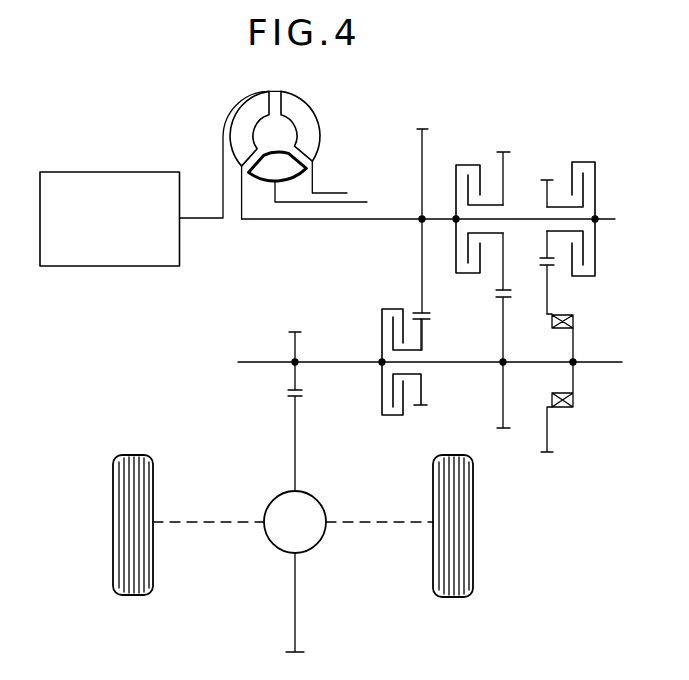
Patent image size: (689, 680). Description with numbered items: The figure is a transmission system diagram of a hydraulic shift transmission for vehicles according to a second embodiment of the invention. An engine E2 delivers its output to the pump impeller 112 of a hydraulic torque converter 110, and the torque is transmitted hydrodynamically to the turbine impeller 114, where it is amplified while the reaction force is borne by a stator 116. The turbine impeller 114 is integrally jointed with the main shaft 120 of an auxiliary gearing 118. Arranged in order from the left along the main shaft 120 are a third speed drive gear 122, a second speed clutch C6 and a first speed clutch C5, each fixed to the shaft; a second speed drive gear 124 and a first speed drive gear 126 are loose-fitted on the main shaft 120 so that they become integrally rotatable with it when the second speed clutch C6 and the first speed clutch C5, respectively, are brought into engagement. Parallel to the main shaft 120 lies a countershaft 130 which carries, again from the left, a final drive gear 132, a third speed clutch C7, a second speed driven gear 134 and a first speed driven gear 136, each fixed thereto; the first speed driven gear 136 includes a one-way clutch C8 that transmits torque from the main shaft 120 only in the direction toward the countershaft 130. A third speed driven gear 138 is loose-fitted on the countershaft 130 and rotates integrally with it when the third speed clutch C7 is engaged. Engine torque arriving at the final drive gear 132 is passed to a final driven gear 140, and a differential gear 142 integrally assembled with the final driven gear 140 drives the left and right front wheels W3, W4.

The hydraulic torque converter 110 is at (278, 165).
The pump impeller 112 is at (311, 135).
The turbine impeller 114 is at (247, 122).
The stator 116 is at (263, 177).
The auxiliary gearing 118 is at (563, 128).
The main shaft 120 is at (314, 221).
The third speed drive gear 122 is at (424, 142).
The second speed drive gear 124 is at (510, 162).
The first speed drive gear 126 is at (547, 192).
The countershaft 130 is at (346, 365).
The final drive gear 132 is at (297, 342).
The second speed driven gear 134 is at (501, 397).
The first speed driven gear 136 is at (548, 442).
The third speed driven gear 138 is at (422, 335).
The final driven gear 140 is at (293, 445).
The differential gear 142 is at (282, 535).
The first speed clutch C5 is at (598, 168).
The second speed clutch C6 is at (470, 165).
The third speed clutch C7 is at (382, 414).
The one-way clutch C8 is at (575, 322).
The engine E2 is at (115, 256).
The left front wheel W3 is at (117, 585).
The right front wheel W4 is at (474, 572).